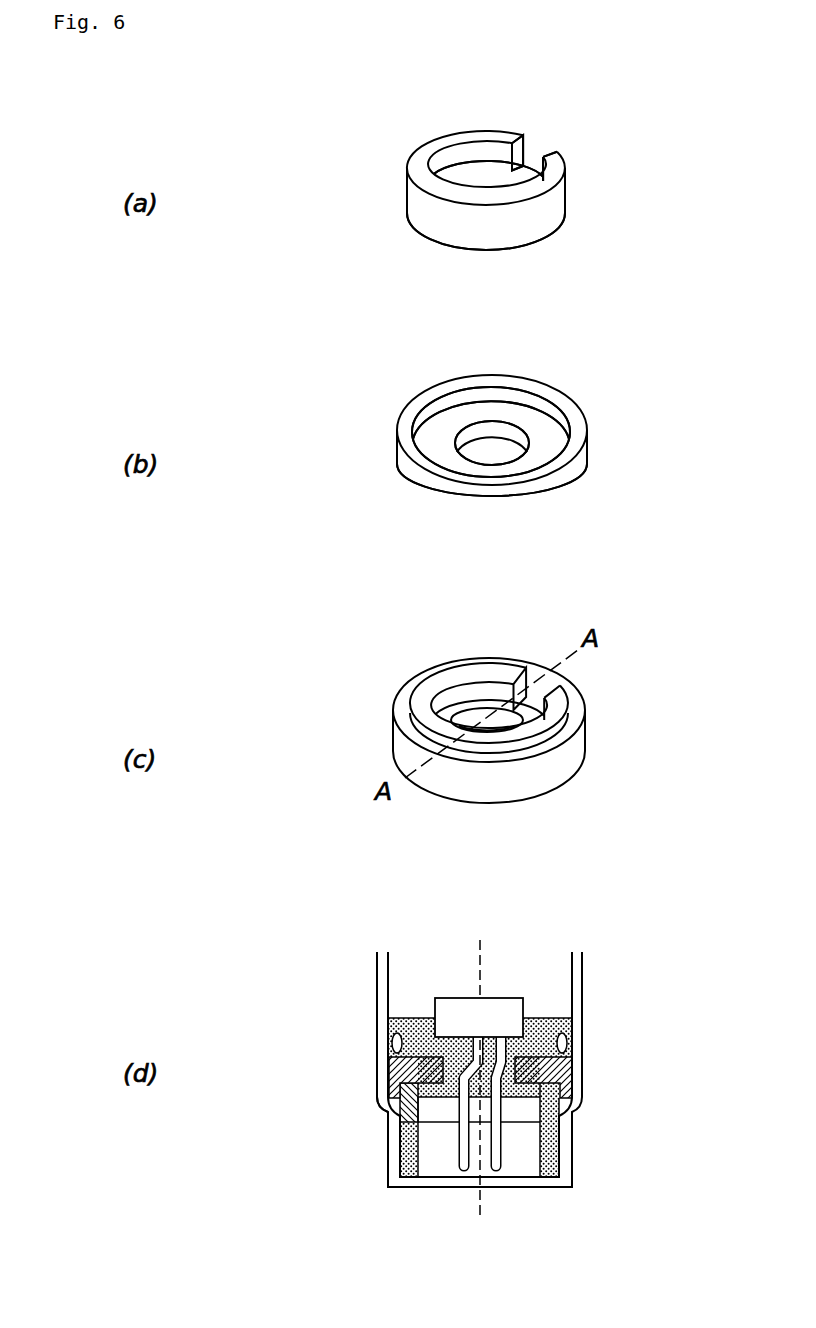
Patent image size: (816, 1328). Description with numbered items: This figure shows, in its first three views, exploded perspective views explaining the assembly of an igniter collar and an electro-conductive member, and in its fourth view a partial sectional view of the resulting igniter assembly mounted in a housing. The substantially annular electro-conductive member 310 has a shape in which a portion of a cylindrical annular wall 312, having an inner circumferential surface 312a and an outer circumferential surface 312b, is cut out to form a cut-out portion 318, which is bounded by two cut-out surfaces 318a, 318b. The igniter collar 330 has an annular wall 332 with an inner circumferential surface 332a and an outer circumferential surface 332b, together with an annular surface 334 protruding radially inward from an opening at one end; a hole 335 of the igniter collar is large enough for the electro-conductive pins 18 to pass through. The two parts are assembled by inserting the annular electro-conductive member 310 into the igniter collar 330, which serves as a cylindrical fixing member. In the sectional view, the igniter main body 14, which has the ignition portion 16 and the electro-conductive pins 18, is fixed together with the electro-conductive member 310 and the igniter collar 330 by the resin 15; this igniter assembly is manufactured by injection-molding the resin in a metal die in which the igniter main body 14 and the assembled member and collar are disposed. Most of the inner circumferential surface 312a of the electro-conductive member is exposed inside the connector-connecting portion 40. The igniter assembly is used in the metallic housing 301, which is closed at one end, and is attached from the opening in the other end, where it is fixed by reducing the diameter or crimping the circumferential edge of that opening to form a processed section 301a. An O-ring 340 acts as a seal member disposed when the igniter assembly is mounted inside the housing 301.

The electro-conductive member 310 is at (557, 234).
The cylindrical annular wall 312 is at (326, 101).
The inner circumferential surface 312a is at (442, 163).
The outer circumferential surface 312b is at (418, 205).
The cut-out portion 318 is at (536, 156).
The cut-out surface 318a is at (528, 146).
The cut-out surface 318b is at (548, 148).
The igniter collar 330 is at (600, 499).
The annular wall 332 is at (312, 352).
The inner circumferential surface 332a is at (430, 408).
The outer circumferential surface 332b is at (403, 462).
The annular surface 334 is at (507, 415).
The hole 335 is at (507, 447).
The igniter main body 14 is at (506, 977).
The resin 15 is at (410, 1018).
The ignition portion 16 is at (493, 1035).
The electro-conductive pins 18 is at (466, 1172).
The connector-connecting portion 40 is at (455, 1159).
The housing 301 is at (582, 972).
The processed section 301a is at (385, 1103).
The O-ring 340 is at (567, 1043).